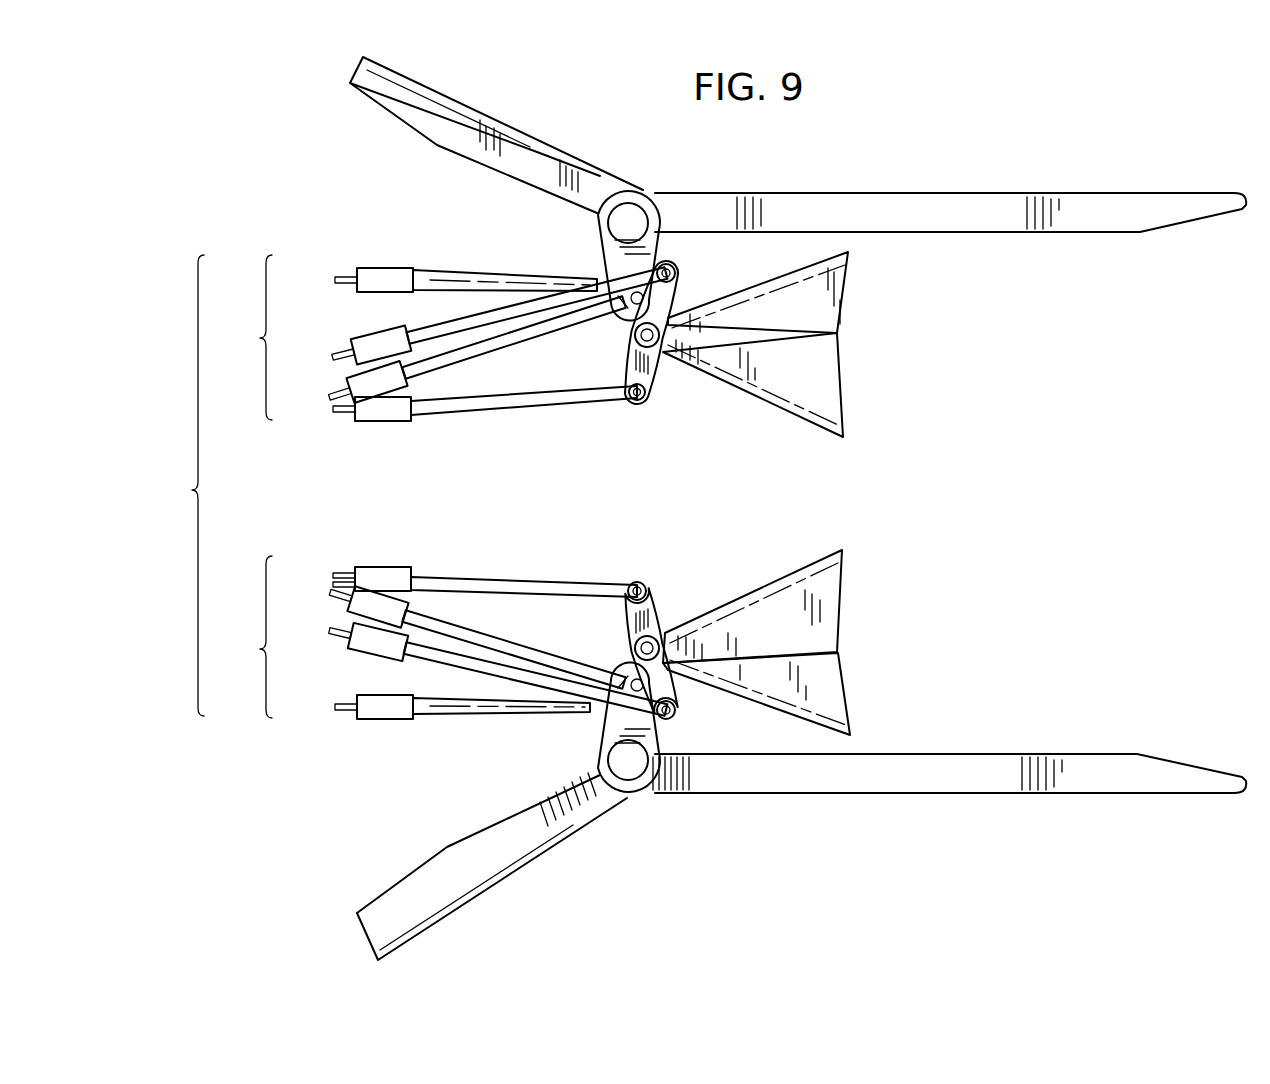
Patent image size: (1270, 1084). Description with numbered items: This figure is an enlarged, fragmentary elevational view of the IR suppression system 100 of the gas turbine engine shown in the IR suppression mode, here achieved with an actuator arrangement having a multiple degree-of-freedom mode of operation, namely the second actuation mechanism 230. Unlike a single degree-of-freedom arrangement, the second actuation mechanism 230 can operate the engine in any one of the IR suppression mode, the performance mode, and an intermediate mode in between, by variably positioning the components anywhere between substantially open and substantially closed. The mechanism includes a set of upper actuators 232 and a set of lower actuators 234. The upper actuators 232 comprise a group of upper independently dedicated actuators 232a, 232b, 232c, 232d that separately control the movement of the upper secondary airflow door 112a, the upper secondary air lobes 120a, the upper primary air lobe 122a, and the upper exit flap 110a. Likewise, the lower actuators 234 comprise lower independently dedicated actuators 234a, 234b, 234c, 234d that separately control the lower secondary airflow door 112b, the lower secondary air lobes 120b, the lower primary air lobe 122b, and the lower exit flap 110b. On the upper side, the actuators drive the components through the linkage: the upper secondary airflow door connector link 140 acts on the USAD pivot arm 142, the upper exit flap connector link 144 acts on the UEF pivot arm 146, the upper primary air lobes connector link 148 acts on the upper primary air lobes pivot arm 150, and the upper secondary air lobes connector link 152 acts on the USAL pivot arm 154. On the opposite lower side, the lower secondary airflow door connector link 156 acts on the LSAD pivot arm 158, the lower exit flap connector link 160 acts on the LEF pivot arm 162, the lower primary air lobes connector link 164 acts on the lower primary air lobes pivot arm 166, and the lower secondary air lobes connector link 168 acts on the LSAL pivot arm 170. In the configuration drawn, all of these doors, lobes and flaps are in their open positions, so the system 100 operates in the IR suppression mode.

The IR suppression system 100 is at (1118, 118).
The upper exit flap 110a is at (945, 193).
The lower exit flap 110b is at (962, 793).
The upper secondary airflow door 112a is at (418, 80).
The lower secondary airflow door 112b is at (452, 903).
The upper secondary air lobes 120a is at (787, 420).
The lower secondary air lobes 120b is at (847, 552).
The upper primary air lobe 122a is at (853, 262).
The lower primary air lobe 122b is at (845, 700).
The upper secondary airflow door connector link 140 is at (600, 255).
The USAD pivot arm 142 is at (568, 273).
The upper exit flap connector link 144 is at (468, 322).
The UEF pivot arm 146 is at (660, 252).
The upper primary air lobes connector link 148 is at (483, 347).
The upper primary air lobes pivot arm 150 is at (678, 280).
The upper secondary air lobes connector link 152 is at (492, 403).
The USAL pivot arm 154 is at (652, 378).
The lower secondary airflow door connector link 156 is at (430, 712).
The LSAD pivot arm 158 is at (595, 718).
The lower exit flap connector link 160 is at (574, 667).
The LEF pivot arm 162 is at (658, 743).
The lower primary air lobes connector link 164 is at (476, 667).
The lower primary air lobes pivot arm 166 is at (727, 705).
The lower secondary air lobes connector link 168 is at (480, 587).
The LSAL pivot arm 170 is at (657, 612).
The second actuation mechanism 230 is at (179, 485).
The set of upper actuators 232 is at (247, 337).
The upper independently dedicated actuator 232a is at (365, 275).
The upper independently dedicated actuator 232b is at (360, 347).
The upper independently dedicated actuator 232c is at (362, 380).
The upper independently dedicated actuator 232d is at (383, 413).
The set of lower actuators 234 is at (247, 637).
The lower independently dedicated actuator 234a is at (373, 568).
The lower independently dedicated actuator 234b is at (360, 607).
The lower independently dedicated actuator 234c is at (362, 640).
The lower independently dedicated actuator 234d is at (363, 707).